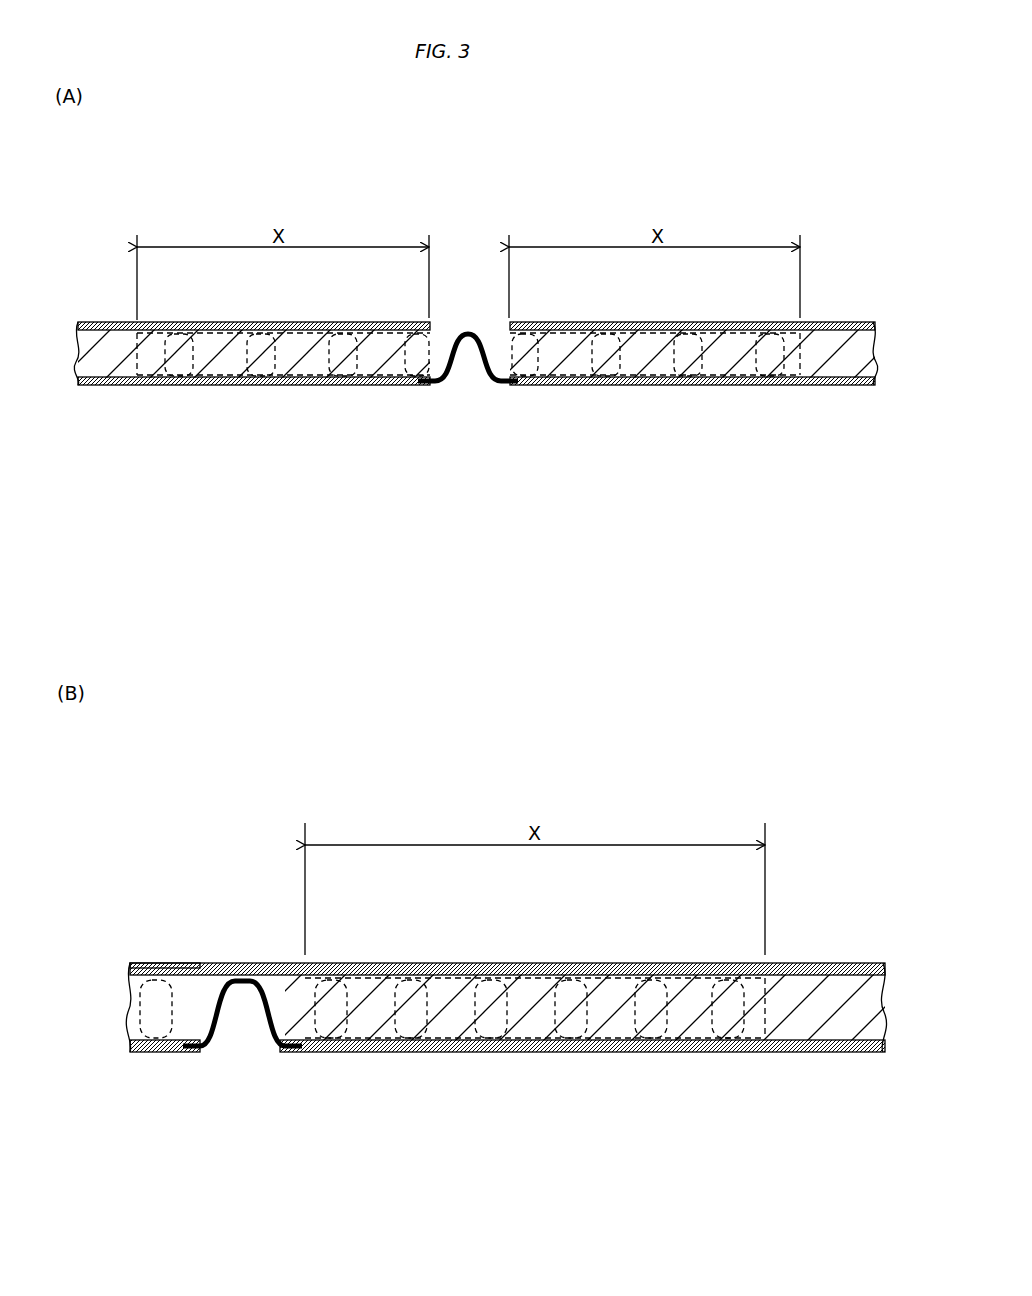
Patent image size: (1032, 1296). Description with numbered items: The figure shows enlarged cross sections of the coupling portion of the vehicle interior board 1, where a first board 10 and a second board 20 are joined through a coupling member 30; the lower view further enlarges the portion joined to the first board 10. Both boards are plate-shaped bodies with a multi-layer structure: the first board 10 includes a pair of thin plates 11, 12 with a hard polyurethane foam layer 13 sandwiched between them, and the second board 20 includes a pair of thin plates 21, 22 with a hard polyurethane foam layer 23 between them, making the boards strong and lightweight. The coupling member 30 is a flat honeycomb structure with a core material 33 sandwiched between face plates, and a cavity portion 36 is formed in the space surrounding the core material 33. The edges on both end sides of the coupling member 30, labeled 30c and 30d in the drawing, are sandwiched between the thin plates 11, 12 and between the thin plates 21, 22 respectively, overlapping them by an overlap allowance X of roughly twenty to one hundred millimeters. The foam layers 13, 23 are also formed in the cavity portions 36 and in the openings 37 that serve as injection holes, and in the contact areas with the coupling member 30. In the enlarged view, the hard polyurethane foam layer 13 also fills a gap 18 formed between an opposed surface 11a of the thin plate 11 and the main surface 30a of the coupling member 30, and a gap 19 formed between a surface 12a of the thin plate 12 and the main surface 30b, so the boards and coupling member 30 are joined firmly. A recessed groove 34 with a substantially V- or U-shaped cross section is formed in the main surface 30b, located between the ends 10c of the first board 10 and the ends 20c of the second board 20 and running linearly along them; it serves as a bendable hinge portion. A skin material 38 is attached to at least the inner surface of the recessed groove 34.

The vehicle interior board 1 is at (215, 175).
The first board 10 is at (835, 230).
The ends of the first board 10c is at (295, 962).
The thin plate 11 is at (742, 326).
The surface of the thin plate 11a is at (625, 975).
The thin plate 12 is at (788, 386).
The surface of the thin plate 12a is at (635, 1052).
The hard polyurethane foam layer 13 is at (862, 385).
The gap 18 is at (455, 962).
The gap 19 is at (435, 1052).
The second board 20 is at (110, 230).
The ends of the second board 20c is at (192, 962).
The thin plate 21 is at (208, 326).
The thin plate 22 is at (210, 384).
The hard polyurethane foam layer 23 is at (120, 362).
The coupling member 30 is at (473, 240).
The main surface of the coupling member 30a is at (478, 332).
The main surface of the coupling member 30b is at (436, 384).
The right end of joining member 30c is at (820, 328).
The left end of joining member 30d is at (118, 330).
The core material 33 is at (135, 990).
The recessed groove 34 is at (478, 376).
The cavity portion 36 is at (732, 385).
The openings 37 is at (278, 326).
The skin material 38 is at (460, 376).